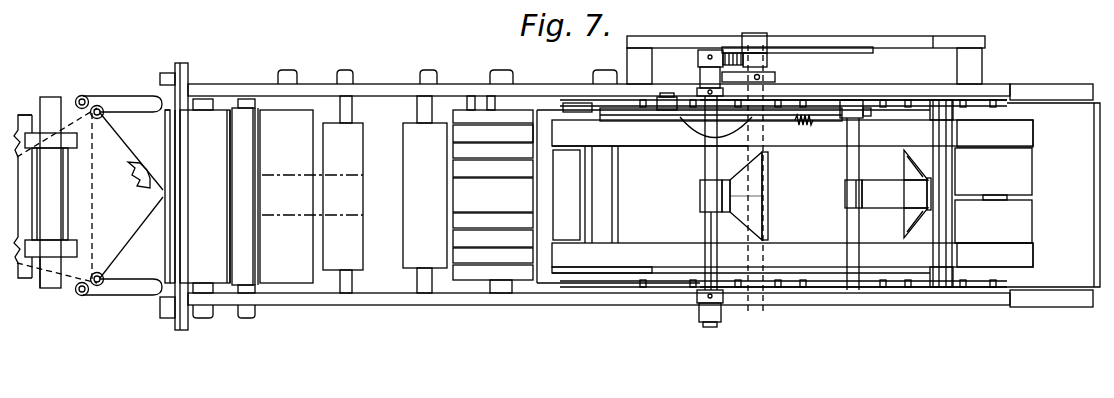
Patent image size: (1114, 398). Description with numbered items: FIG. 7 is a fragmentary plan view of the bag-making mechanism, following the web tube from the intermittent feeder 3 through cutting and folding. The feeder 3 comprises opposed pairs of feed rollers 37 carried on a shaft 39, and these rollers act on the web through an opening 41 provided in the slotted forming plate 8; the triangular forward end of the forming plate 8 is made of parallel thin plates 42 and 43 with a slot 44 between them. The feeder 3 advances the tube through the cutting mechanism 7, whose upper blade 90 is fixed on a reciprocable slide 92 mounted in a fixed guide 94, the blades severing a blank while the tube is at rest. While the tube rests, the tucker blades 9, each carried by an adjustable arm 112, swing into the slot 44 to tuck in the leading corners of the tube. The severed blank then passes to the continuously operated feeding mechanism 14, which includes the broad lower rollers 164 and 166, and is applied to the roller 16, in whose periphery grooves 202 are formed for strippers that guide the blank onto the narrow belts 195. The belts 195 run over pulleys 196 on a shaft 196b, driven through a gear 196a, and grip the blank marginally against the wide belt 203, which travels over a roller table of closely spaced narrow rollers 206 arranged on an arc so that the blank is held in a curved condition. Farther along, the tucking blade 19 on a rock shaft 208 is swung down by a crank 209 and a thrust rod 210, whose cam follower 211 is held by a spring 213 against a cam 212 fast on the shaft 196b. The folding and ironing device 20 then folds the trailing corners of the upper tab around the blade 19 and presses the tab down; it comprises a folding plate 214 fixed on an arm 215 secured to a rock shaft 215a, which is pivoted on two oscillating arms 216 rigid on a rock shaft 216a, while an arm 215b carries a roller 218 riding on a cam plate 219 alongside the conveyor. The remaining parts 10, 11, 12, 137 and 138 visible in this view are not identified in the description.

The intermittent feeder 3 is at (24, 104).
The cutting mechanism 7 is at (160, 137).
The forming plate 8 is at (25, 280).
The tucker blades 9 is at (118, 104).
The main frame rail 10 is at (223, 288).
The end plate 11 is at (185, 243).
The partition plate 12 is at (240, 106).
The continuously operated feeding mechanism 14 is at (356, 102).
The roller 16 is at (465, 110).
The tucking blade 19 is at (897, 172).
The folding and ironing mechanism 20 is at (771, 184).
The feed rollers 37 is at (76, 143).
The shaft 39 is at (48, 97).
The opening 41 is at (67, 186).
The thin plate 42 is at (158, 198).
The thin plate 43 is at (145, 178).
The slot 44 is at (90, 195).
The blade 90 is at (160, 100).
The reciprocable slide 92 is at (177, 267).
The fixed guide 94 is at (166, 73).
The arm 112 is at (67, 285).
The bolt 137 is at (199, 313).
The plate edge 138 is at (236, 209).
The broad lower roller 164 is at (360, 138).
The broad lower roller 166 is at (413, 228).
The belts 195 is at (666, 142).
The pulleys 196 is at (625, 147).
The gear 196a is at (556, 197).
The shaft 196b is at (606, 184).
The grooves 202 is at (508, 138).
The wide belt 203 is at (577, 284).
The narrow rollers 206 is at (771, 100).
The rock shaft 208 is at (848, 222).
The crank 209 is at (859, 103).
The thrust rod 210 is at (773, 114).
The cam follower 211 is at (667, 97).
The cam 212 is at (573, 103).
The spring 213 is at (808, 124).
The folding plate 214 is at (769, 201).
The arm 215 is at (700, 196).
The rock shaft 215a is at (710, 233).
The arm 215b is at (737, 52).
The oscillating arms 216 is at (706, 79).
The rock shaft 216a is at (766, 254).
The roller 218 is at (755, 34).
The cam plate 219 is at (800, 38).